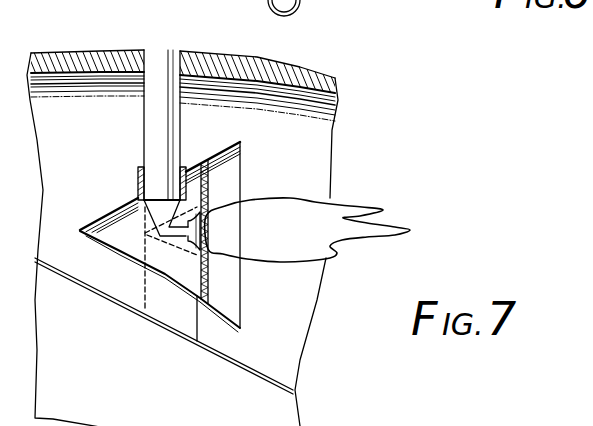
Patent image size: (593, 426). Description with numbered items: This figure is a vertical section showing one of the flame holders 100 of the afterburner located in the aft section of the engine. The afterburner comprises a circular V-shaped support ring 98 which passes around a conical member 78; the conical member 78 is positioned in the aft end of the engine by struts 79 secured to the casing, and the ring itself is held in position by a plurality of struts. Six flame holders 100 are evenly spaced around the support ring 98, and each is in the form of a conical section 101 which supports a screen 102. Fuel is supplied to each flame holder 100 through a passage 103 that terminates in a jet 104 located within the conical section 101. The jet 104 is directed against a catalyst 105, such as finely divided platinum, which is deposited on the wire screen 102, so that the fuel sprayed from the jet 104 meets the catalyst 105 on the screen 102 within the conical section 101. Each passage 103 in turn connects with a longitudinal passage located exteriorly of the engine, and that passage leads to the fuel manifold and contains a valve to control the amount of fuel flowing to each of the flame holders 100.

The conical member 78 is at (66, 276).
The struts 79 is at (91, 44).
The V-shaped support ring 98 is at (147, 290).
The flame holder 100 is at (226, 139).
The conical section 101 is at (241, 316).
The screen 102 is at (208, 279).
The passage 103 is at (145, 117).
The jet 104 is at (173, 238).
The catalyst 105 is at (207, 208).